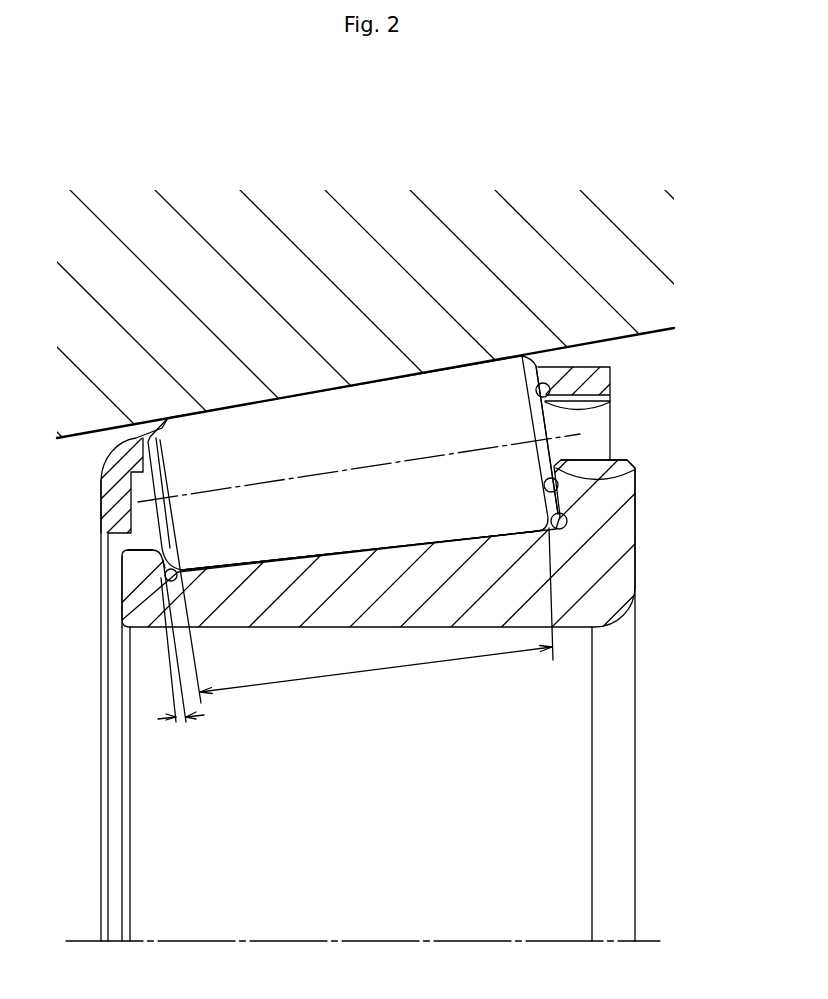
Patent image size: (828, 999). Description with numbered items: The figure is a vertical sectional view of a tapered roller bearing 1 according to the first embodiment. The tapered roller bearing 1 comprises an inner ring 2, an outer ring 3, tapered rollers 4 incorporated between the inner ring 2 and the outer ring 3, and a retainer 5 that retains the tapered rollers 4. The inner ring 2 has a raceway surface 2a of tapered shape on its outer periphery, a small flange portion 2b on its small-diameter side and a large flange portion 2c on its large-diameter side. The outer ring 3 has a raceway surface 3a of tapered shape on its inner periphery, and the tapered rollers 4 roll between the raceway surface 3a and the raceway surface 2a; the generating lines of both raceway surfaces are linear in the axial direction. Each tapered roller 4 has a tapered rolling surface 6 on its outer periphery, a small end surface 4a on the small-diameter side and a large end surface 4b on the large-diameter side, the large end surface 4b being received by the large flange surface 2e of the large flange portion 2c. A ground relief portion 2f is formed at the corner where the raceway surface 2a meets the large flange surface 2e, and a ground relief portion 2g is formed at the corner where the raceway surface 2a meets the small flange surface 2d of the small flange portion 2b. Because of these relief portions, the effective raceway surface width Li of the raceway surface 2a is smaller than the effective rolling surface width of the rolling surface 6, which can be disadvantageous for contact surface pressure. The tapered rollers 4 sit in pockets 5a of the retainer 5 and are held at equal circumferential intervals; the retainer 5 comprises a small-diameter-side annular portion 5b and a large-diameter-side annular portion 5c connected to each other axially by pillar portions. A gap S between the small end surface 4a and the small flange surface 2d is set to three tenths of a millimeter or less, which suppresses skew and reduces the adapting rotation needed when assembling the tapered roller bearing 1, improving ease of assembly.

The tapered roller bearing 1 is at (612, 175).
The inner ring 2 is at (430, 606).
The raceway surface 2a is at (324, 562).
The small flange portion 2b is at (138, 566).
The large flange portion 2c is at (596, 488).
The small flange surface 2d is at (148, 543).
The large flange surface 2e is at (553, 468).
The ground relief portion 2f is at (565, 522).
The ground relief portion 2g is at (165, 585).
The outer ring 3 is at (600, 319).
The raceway surface 3a is at (320, 392).
The tapered roller 4 is at (447, 506).
The small end surface 4a is at (145, 500).
The large end surface 4b is at (557, 452).
The retainer 5 is at (616, 375).
The pocket 5a is at (543, 407).
The small-diameter-side annular portion 5b is at (116, 455).
The large-diameter-side annular portion 5c is at (593, 373).
The rolling surface 6 is at (326, 552).
The gap S is at (181, 653).
The effective raceway surface width Li is at (257, 689).